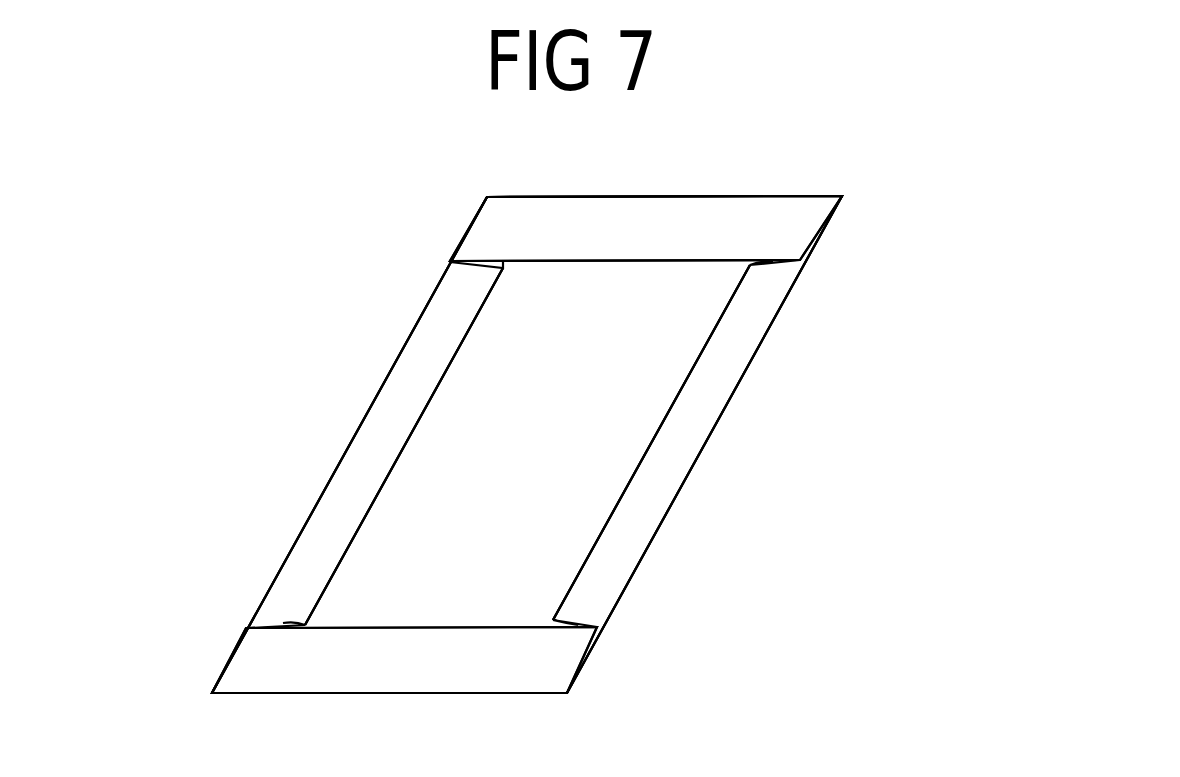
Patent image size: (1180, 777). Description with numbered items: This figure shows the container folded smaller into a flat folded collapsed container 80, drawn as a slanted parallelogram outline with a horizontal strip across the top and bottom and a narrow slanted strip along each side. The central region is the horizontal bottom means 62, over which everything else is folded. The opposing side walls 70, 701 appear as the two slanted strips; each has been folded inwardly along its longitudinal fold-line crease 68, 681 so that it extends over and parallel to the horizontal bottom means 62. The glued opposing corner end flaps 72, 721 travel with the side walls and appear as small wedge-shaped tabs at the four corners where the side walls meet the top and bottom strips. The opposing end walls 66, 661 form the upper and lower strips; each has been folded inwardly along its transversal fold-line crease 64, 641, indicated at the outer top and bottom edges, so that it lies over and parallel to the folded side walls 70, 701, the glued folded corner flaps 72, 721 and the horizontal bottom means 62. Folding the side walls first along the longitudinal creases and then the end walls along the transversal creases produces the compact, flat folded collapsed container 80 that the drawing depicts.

The horizontal bottom means 62 is at (527, 445).
The transversal fold-line crease 64 is at (418, 693).
The transversal fold-line crease 641 is at (594, 197).
The end wall 66 is at (404, 660).
The end wall 661 is at (646, 228).
The longitudinal fold-line crease 68 is at (688, 470).
The longitudinal fold-line crease 681 is at (352, 447).
The side wall 70 is at (697, 444).
The side wall 701 is at (357, 445).
The corner end flap 72 is at (793, 263).
The corner end flap 721 is at (450, 262).
The folded collapsed container 80 is at (731, 436).